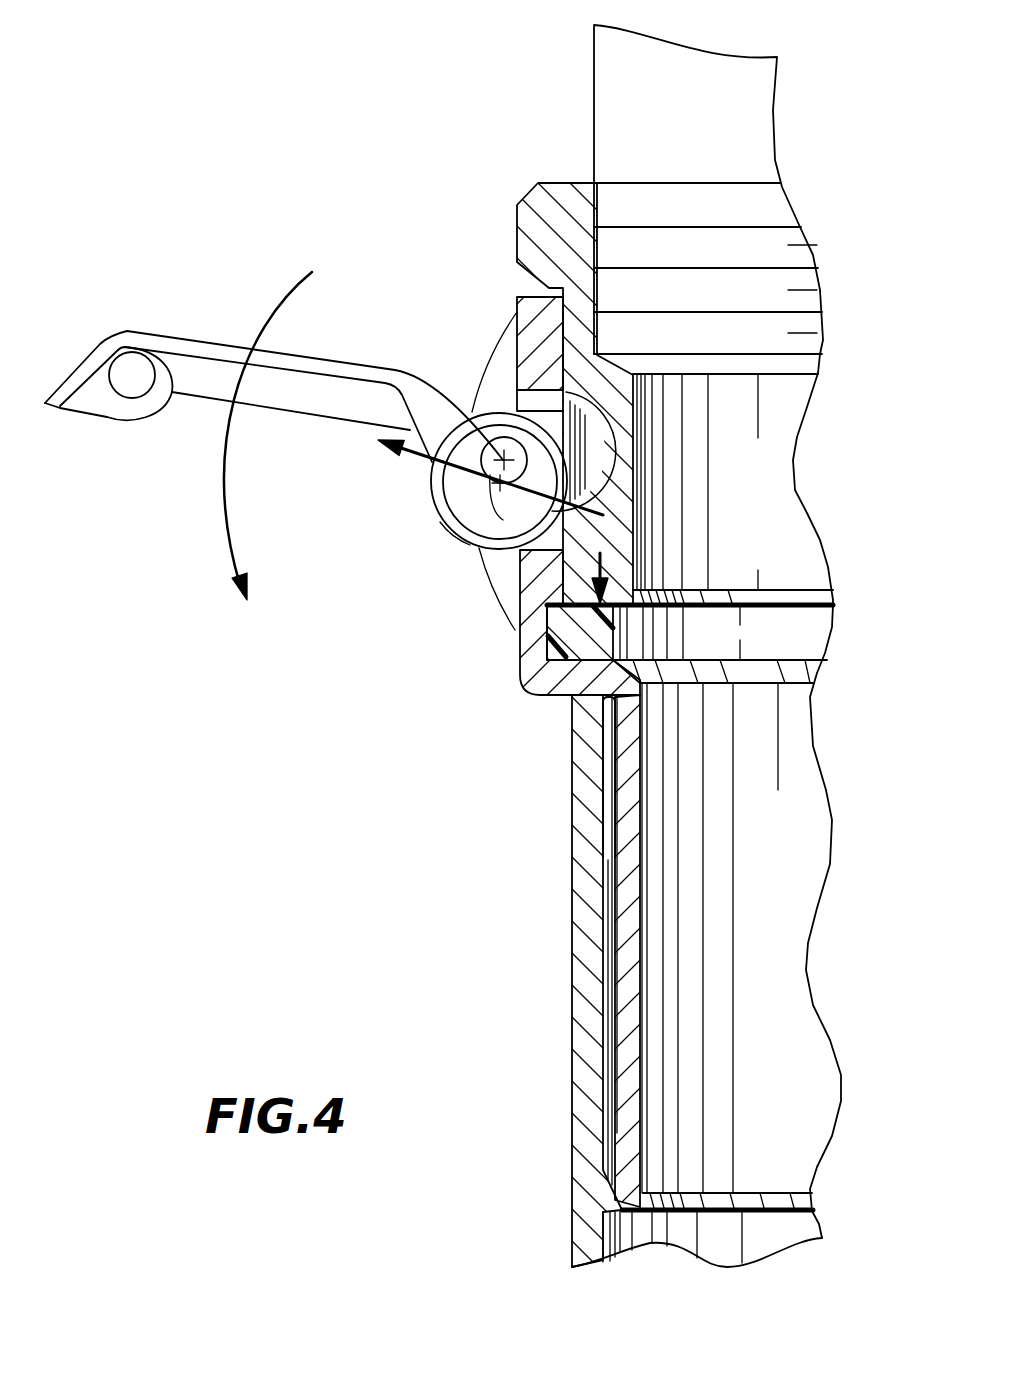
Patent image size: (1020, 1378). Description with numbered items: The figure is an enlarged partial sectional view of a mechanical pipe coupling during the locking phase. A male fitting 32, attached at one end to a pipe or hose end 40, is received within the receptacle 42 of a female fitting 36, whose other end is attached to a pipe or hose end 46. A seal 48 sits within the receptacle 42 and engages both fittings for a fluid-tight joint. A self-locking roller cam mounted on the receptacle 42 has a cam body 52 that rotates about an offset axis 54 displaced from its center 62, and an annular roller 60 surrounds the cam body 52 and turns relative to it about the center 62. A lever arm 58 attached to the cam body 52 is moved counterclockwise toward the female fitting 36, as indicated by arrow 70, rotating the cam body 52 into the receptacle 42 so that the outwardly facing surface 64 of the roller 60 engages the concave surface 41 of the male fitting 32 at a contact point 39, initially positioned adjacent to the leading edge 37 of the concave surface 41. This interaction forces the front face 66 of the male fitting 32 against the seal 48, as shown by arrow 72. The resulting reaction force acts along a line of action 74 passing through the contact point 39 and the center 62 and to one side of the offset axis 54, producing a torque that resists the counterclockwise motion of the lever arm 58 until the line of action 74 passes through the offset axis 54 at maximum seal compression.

The pipe or hose end 40 is at (622, 127).
The male fitting 32 is at (540, 213).
The receptacle 42 is at (530, 310).
The concave surface 41 is at (470, 408).
The offset axis 54 is at (468, 412).
The arrow 70 is at (275, 303).
The lever arm 58 is at (110, 405).
The annular roller 60 is at (440, 497).
The outwardly facing surface 64 is at (438, 520).
The center of the cam body 62 is at (443, 532).
The cam body 52 is at (503, 520).
The leading edge 37 is at (605, 420).
The contact point 39 is at (607, 510).
The line of action 74 is at (612, 525).
The arrow 72 is at (603, 577).
The front face 66 is at (615, 600).
The seal 48 is at (785, 640).
The female fitting 36 is at (628, 977).
The pipe or hose end 46 is at (585, 1120).